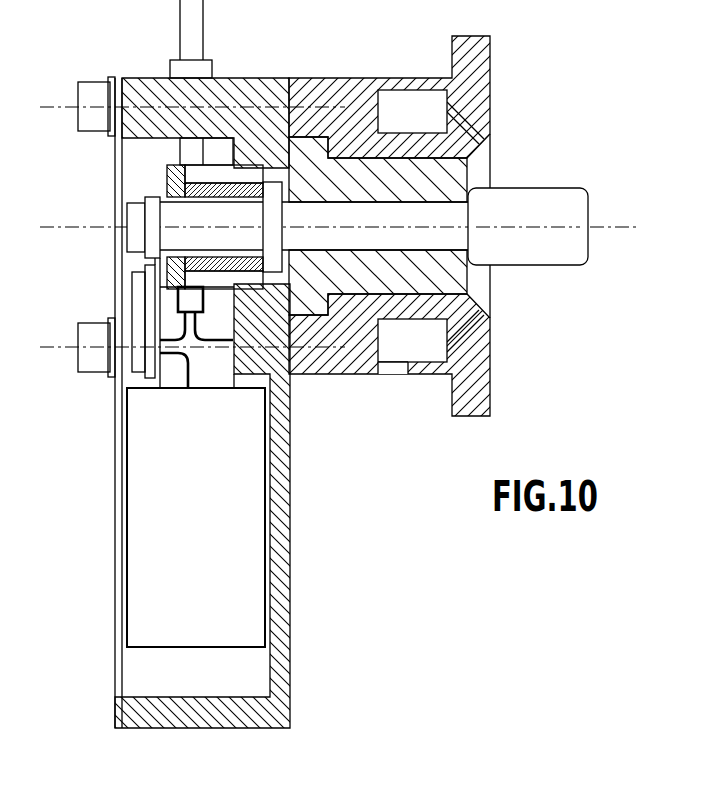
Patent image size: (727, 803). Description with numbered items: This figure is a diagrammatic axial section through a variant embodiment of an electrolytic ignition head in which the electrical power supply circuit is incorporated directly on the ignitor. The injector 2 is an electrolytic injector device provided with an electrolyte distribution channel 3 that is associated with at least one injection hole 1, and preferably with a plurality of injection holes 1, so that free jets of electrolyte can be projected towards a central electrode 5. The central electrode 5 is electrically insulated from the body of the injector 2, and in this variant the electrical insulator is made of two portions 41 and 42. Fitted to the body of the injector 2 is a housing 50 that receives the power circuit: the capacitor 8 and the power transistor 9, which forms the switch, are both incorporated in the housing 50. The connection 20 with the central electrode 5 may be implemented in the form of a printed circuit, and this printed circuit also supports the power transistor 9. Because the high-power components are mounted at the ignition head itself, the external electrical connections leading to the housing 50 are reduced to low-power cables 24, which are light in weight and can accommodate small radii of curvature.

The injection hole 1 is at (492, 138).
The injector 2 is at (320, 90).
The electrolyte distribution channel 3 is at (402, 107).
The central electrode 5 is at (553, 205).
The capacitor 8 is at (142, 457).
The power transistor 9 is at (135, 307).
The connection 20 is at (155, 297).
The low-power cables 24 is at (190, 30).
The insulator portion 41 is at (447, 180).
The insulator portion 42 is at (228, 183).
The housing 50 is at (290, 472).